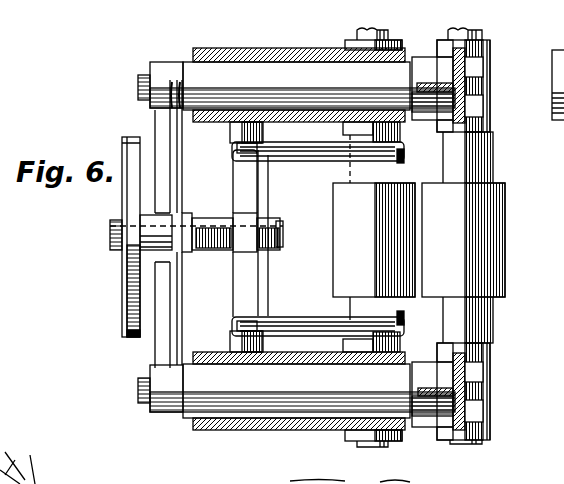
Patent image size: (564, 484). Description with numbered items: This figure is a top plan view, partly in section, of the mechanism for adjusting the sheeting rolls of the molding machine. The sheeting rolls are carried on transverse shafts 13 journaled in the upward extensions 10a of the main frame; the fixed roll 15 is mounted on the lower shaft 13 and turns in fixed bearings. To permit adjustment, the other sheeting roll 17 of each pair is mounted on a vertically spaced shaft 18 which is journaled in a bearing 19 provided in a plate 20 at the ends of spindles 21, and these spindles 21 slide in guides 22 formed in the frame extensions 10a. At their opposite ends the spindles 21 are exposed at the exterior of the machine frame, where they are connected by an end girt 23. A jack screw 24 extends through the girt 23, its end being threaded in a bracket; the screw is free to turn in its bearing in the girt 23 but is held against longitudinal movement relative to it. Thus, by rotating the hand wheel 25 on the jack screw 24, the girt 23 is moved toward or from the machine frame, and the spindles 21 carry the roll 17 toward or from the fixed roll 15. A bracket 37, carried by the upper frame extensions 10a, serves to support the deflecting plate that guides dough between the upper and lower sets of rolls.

The upward extension of the main frame 10a is at (266, 285).
The transverse shaft 13 is at (398, 237).
The second roll 15 is at (374, 240).
The sheeting roll 17 is at (519, 242).
The shaft 18 is at (486, 164).
The bearing 19 is at (490, 85).
The plate 20 is at (448, 57).
The spindle 21 is at (296, 240).
The guide 22 is at (320, 44).
The end girt 23 is at (177, 322).
The jack screw 24 is at (283, 234).
The hand wheel 25 is at (123, 303).
The bracket 37 is at (327, 158).